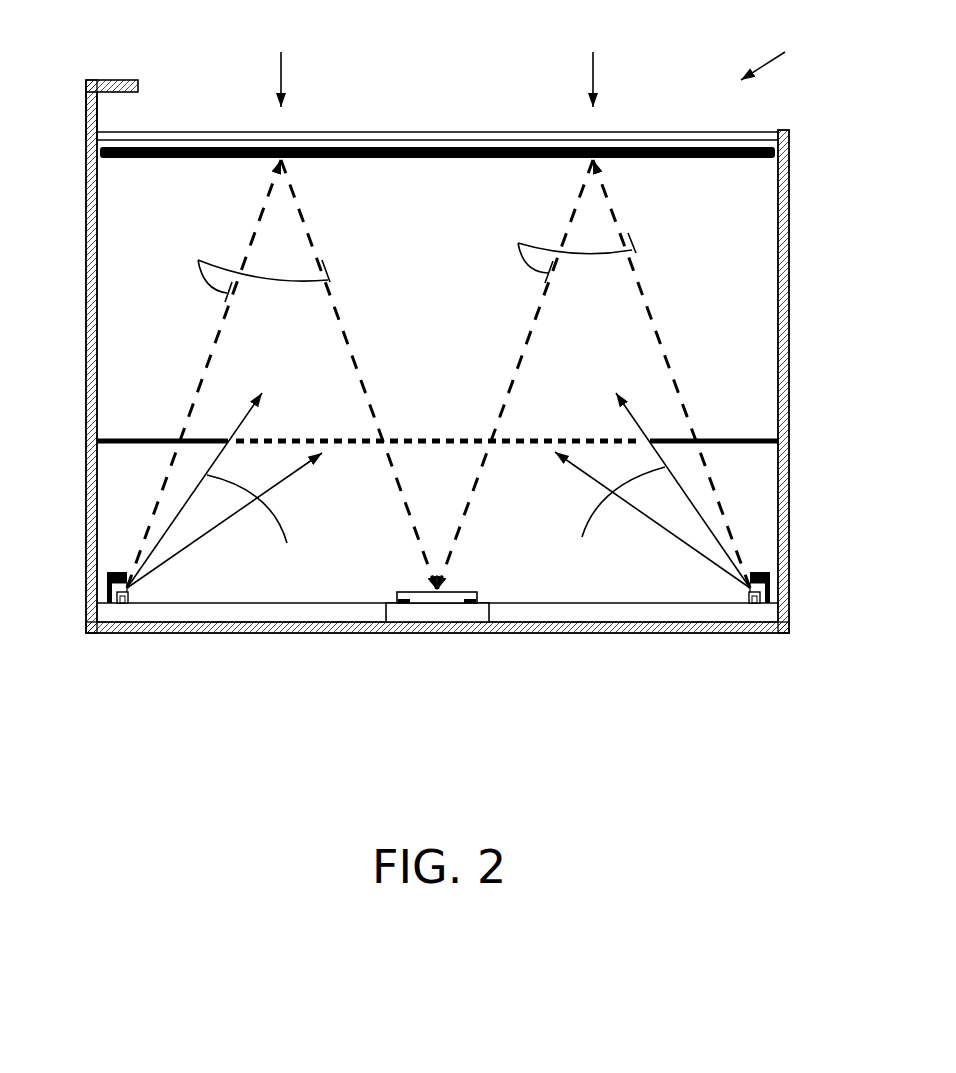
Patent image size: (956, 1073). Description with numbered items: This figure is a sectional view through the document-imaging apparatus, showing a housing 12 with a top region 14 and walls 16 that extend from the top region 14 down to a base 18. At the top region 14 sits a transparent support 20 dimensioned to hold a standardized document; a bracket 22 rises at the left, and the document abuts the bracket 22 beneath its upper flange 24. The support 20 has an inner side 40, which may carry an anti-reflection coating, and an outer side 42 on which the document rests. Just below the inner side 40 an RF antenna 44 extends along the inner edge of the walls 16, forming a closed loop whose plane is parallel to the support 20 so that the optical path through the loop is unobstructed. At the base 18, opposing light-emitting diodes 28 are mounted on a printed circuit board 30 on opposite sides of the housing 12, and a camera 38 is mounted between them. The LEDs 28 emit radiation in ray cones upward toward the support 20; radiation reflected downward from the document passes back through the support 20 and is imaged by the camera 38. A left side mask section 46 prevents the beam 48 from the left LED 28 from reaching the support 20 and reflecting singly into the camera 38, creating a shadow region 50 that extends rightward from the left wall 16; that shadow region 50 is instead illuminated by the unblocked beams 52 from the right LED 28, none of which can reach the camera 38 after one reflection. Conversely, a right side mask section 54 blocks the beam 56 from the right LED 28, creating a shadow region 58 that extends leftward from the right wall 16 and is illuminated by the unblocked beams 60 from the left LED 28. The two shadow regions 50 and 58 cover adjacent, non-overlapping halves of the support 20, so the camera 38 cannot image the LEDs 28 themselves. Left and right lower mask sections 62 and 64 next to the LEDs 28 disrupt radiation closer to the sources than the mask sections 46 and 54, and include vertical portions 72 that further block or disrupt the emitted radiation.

The housing 12 is at (790, 148).
The top region 14 is at (779, 55).
The walls 16 is at (85, 275).
The base 18 is at (210, 633).
The support 20 is at (437, 108).
The bracket 22 is at (85, 92).
The upper flange 24 is at (128, 78).
The light-emitting diodes 28 is at (123, 603).
The printed circuit board 30 is at (618, 603).
The camera 38 is at (446, 598).
The inner side 40 is at (377, 140).
The outer side 42 is at (502, 130).
The RF antenna 44 is at (153, 147).
The left side mask section 46 is at (110, 440).
The electromagnetic radiation beam 48 is at (254, 268).
The shadow region 50 is at (282, 65).
The unblocked electromagnetic radiation beams 52 is at (652, 490).
The right side mask section 54 is at (762, 440).
The electromagnetic radiation beam 56 is at (564, 250).
The shadow region 58 is at (593, 65).
The unblocked electromagnetic radiation beams 60 is at (224, 490).
The left lower mask section 62 is at (112, 572).
The right lower mask section 64 is at (762, 572).
The vertical portions 72 is at (108, 597).